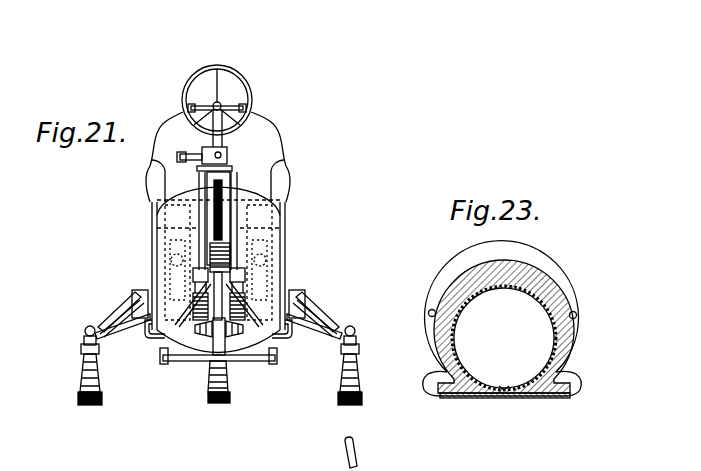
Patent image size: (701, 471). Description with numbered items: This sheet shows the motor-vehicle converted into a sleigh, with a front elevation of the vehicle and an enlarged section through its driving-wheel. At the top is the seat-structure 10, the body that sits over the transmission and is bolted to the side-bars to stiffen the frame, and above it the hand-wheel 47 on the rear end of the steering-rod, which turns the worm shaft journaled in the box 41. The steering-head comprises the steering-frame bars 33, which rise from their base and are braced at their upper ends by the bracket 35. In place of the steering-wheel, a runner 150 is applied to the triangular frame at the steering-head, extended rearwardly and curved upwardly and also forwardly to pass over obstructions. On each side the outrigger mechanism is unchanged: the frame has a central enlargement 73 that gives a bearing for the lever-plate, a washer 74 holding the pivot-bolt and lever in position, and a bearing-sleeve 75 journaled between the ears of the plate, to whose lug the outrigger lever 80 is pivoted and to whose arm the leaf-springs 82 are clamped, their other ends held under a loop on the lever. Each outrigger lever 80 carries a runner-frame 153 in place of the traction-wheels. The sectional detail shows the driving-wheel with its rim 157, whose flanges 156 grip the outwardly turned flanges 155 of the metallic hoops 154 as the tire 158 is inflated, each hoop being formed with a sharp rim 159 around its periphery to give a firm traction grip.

In FIG. 21, the seat-structure 10 is at (251, 290).
In FIG. 21, the hand-wheel 47 is at (222, 70).
In FIG. 21, the box 41 is at (227, 154).
In FIG. 21, the steering-frame bars 33 is at (202, 230).
In FIG. 21, the bracket 35 is at (235, 230).
In FIG. 21, the enlargement 73 is at (147, 292).
In FIG. 21, the bearing-sleeve 75 is at (136, 297).
In FIG. 21, the leaf-springs 82 is at (112, 307).
In FIG. 21, the outrigger lever 80 is at (103, 337).
In FIG. 21, the washer 74 is at (147, 327).
In FIG. 21, the runner-frame 153 is at (219, 377).
In FIG. 21, the runner 150 is at (217, 394).
In FIG. 23, the sharp rim 159 is at (468, 261).
In FIG. 23, the metallic hoops 154 is at (521, 327).
In FIG. 23, the tire 158 is at (531, 278).
In FIG. 23, the flanges 155 is at (450, 378).
In FIG. 23, the flanges 156 is at (445, 389).
In FIG. 23, the rim 157 is at (505, 399).